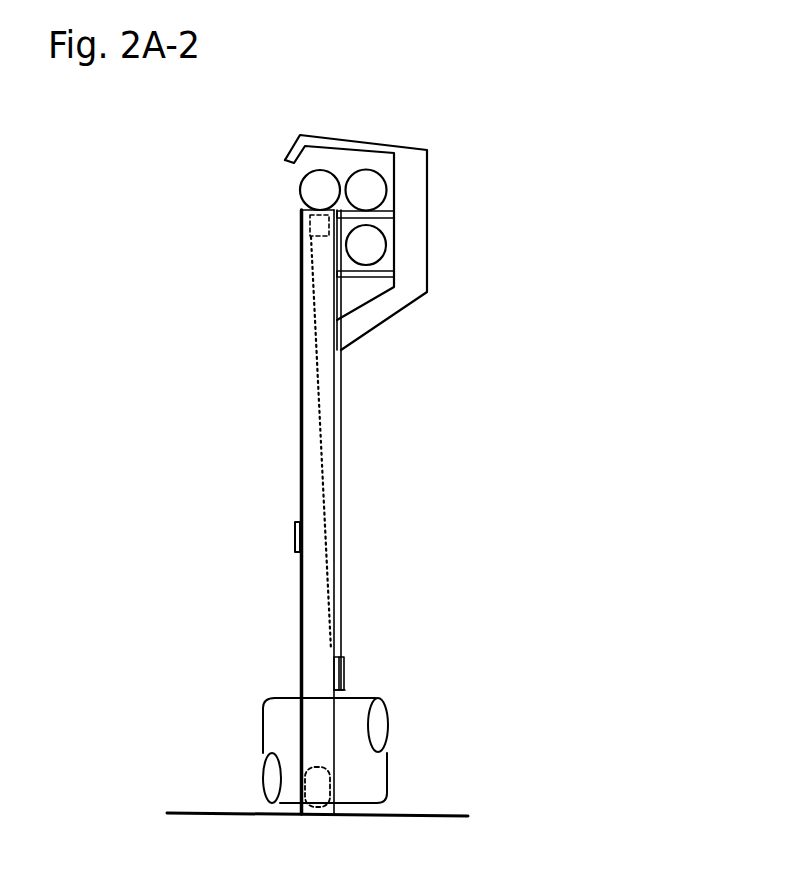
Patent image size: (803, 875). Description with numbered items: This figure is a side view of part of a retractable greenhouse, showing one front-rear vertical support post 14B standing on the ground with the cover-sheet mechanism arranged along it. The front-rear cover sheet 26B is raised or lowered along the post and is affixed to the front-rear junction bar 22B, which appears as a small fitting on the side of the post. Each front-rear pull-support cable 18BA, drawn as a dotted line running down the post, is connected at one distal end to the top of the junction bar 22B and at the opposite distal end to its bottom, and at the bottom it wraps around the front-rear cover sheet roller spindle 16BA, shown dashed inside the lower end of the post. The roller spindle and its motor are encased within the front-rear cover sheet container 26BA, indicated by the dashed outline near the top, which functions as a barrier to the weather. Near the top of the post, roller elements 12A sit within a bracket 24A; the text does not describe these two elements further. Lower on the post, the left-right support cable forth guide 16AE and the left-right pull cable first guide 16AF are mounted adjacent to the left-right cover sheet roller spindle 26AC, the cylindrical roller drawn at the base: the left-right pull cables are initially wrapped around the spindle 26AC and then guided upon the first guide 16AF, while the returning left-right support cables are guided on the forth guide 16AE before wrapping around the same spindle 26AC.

The guide rollers 12A is at (302, 182).
The hook bracket 24A is at (430, 174).
The front-rear cover sheet container 26BA is at (341, 256).
The front-rear cover sheet 26B is at (301, 377).
The front-rear vertical support posts 14B is at (329, 383).
The front-rear pull-support cables 18BA is at (322, 430).
The front-rear junction bar 22B is at (295, 537).
The left-right support cable forth guide 16AE is at (339, 655).
The left-right pull cable first guide 16AF is at (346, 678).
The left-right cover sheet roller spindle 26AC is at (388, 727).
The front-rear cover sheet roller spindle 16BA is at (333, 787).